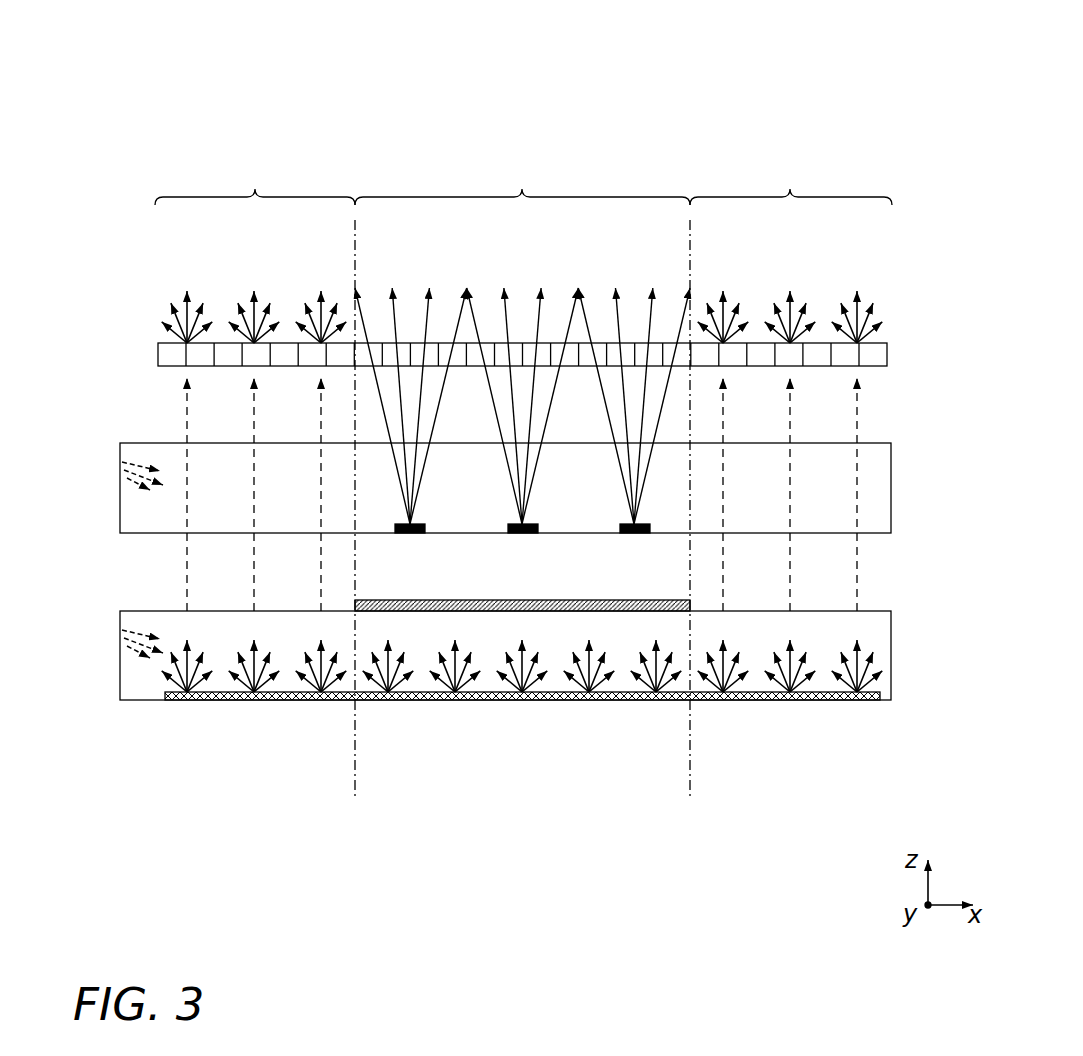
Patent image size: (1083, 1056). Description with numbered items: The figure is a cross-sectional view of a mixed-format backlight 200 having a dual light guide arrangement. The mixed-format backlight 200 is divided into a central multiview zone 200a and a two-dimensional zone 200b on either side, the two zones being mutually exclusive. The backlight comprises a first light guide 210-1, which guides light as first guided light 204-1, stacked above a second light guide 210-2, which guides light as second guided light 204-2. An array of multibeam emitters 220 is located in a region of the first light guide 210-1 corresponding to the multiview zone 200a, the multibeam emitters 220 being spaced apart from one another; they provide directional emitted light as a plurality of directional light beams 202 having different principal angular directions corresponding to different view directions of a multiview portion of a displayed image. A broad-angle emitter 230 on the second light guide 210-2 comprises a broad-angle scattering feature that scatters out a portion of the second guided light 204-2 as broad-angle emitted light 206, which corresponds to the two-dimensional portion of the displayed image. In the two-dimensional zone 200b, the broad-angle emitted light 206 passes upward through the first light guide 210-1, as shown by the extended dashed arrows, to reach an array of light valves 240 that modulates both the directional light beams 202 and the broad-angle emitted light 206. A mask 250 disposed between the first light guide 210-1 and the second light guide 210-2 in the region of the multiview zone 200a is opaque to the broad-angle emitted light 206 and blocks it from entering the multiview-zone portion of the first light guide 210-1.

The mixed-format backlight 200 is at (858, 65).
The multiview zone 200a is at (522, 178).
The 2D zone 200b is at (523, 178).
The directional light beams 202 is at (565, 277).
The first guided light 204-1 is at (130, 488).
The second guided light 204-2 is at (130, 656).
The broad-angle emitted light 206 is at (243, 289).
The first light guide 210-1 is at (891, 488).
The second light guide 210-2 is at (891, 655).
The multibeam emitters 220 is at (412, 533).
The broad-angle emitter 230 is at (260, 700).
The array of light valves 240 is at (155, 350).
The mask 250 is at (592, 600).